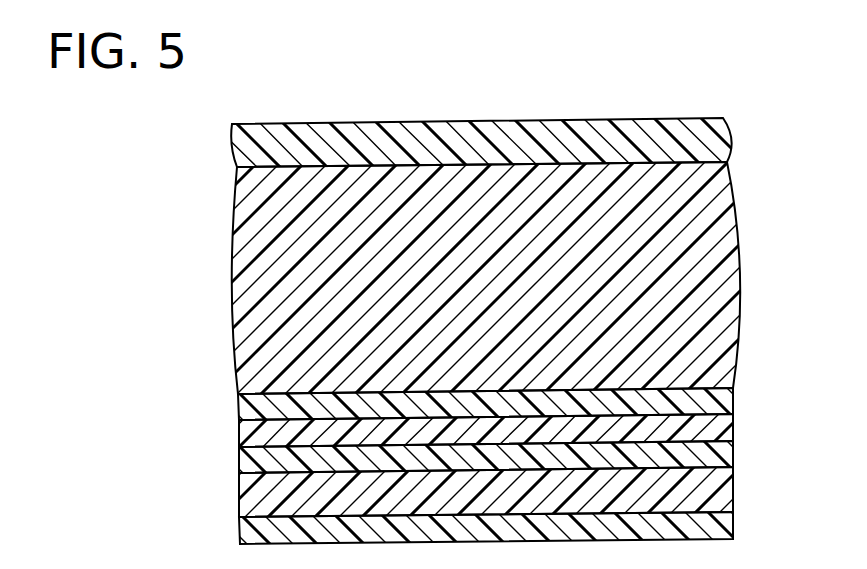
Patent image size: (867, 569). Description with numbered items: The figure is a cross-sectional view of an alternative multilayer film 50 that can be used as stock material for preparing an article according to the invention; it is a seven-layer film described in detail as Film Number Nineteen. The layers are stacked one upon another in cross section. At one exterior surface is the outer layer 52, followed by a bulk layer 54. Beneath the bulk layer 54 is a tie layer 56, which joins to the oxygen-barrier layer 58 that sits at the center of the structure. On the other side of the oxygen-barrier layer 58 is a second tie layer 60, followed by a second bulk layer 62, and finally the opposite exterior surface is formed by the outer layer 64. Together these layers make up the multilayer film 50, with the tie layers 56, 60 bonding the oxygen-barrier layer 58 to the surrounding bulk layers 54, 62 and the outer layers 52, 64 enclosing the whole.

The multilayer film 50 is at (167, 194).
The outer layer 52 is at (703, 144).
The bulk layer 54 is at (721, 275).
The tie layer 56 is at (735, 398).
The O2-barrier layer 58 is at (238, 432).
The tie layer 60 is at (735, 452).
The bulk layer 62 is at (238, 502).
The outer layer 64 is at (735, 521).